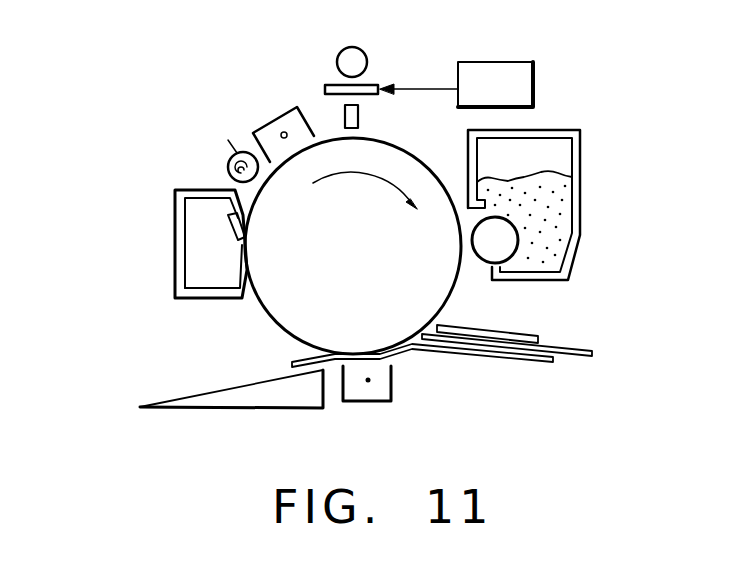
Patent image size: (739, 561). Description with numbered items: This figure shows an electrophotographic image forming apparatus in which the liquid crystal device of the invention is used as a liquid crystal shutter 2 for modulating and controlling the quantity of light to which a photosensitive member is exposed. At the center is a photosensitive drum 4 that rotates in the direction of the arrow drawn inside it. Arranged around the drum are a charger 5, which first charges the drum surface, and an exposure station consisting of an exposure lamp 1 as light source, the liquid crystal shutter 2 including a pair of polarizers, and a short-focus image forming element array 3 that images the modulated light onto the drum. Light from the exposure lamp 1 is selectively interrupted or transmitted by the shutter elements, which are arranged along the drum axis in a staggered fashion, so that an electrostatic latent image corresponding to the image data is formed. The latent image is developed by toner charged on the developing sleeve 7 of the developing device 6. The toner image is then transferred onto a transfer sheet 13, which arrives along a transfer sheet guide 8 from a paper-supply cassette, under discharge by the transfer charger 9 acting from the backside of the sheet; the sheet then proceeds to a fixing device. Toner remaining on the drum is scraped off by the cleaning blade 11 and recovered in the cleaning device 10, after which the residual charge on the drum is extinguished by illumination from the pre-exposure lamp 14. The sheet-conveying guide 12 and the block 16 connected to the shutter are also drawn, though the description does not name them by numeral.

The exposure lamp 1 is at (360, 58).
The liquid crystal shutter 2 is at (325, 87).
The short-focus image forming element array 3 is at (360, 118).
The photosensitive drum 4 is at (405, 162).
The charger 5 is at (275, 118).
The developing device 6 is at (557, 215).
The developing sleeve 7 is at (498, 245).
The transfer sheet guide 8 is at (518, 366).
The transfer charger 9 is at (393, 380).
The cleaning device 10 is at (175, 268).
The cleaning blade 11 is at (242, 237).
The paper guide 12 is at (225, 400).
The transfer sheet 13 is at (577, 362).
The pre-exposure lamp 14 is at (231, 161).
The control unit 16 is at (533, 87).